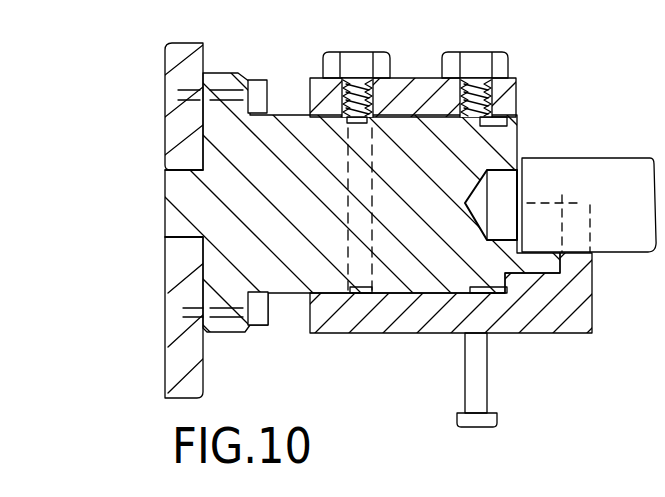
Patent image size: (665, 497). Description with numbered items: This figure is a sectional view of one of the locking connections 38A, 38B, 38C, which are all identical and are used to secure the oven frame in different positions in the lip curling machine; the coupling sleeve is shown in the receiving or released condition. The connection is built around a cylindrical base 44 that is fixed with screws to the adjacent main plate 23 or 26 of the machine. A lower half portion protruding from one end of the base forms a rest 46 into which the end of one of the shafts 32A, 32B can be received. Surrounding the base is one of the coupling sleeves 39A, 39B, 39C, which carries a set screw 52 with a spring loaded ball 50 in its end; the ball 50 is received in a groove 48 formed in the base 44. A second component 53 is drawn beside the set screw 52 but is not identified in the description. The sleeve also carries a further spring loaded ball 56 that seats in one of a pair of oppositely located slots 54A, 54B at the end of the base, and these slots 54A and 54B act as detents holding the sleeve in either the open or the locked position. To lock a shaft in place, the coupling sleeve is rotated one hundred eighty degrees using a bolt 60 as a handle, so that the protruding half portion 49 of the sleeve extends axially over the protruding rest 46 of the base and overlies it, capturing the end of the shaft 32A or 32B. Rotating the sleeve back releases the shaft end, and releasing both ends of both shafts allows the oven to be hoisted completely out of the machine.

The main plate 23 is at (123, 220).
The main plate 26 is at (158, 146).
The cylindrical base 44 is at (205, 212).
The groove 48 is at (347, 214).
The spring loaded ball 50 is at (353, 122).
The set screw 52 is at (325, 56).
The bolt 53 is at (443, 55).
The locking connection 38A is at (447, 76).
The locking connection 38B is at (447, 76).
The locking connection 38C is at (587, 70).
The slot 54A is at (517, 106).
The spring loaded ball 56 is at (503, 124).
The shaft 32A is at (560, 184).
The shaft 32B is at (578, 150).
The coupling sleeve 39A is at (420, 330).
The coupling sleeve 39B is at (420, 330).
The coupling sleeve 39C is at (352, 334).
The protruding half portion 49 is at (578, 313).
The rest 46 is at (547, 268).
The slot 54B is at (507, 273).
The bolt 60 is at (460, 369).